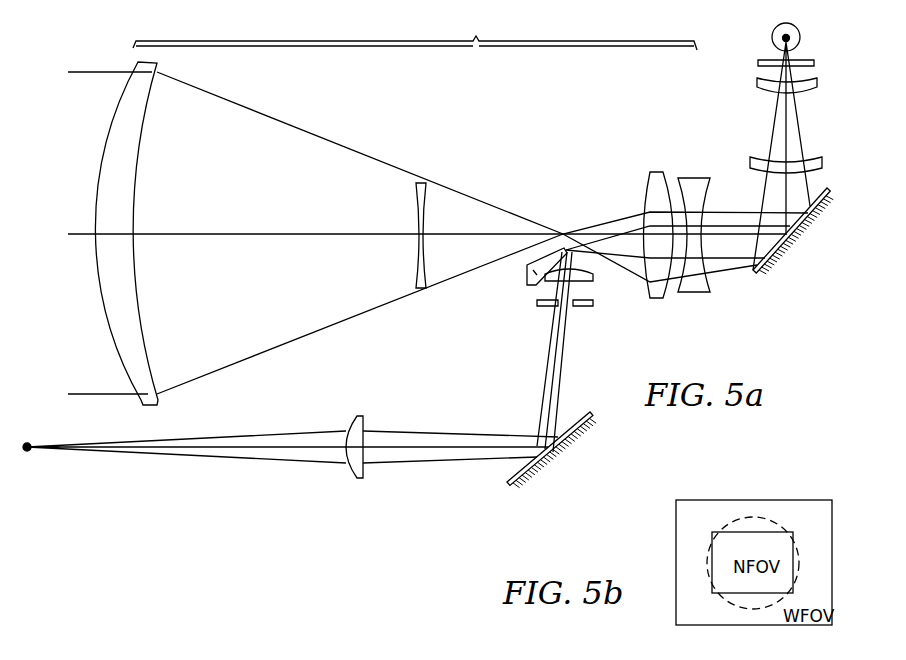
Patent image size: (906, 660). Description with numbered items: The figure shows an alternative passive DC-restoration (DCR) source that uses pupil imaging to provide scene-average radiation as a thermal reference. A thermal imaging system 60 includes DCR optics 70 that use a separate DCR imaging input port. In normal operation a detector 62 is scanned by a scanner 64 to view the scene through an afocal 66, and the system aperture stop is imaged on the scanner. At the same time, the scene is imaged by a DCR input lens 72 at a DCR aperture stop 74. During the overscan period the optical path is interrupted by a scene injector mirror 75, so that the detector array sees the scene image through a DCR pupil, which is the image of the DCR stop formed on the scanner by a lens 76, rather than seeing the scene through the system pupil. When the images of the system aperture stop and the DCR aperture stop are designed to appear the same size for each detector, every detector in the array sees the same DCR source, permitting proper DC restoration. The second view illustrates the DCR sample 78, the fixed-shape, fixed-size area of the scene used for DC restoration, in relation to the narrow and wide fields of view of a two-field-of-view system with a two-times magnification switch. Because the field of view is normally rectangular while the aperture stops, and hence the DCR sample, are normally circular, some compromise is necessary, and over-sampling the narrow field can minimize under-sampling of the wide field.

In FIG. 5a, the thermal imaging system 60 is at (267, 293).
In FIG. 5a, the detector 62 is at (772, 37).
In FIG. 5a, the scanner 64 is at (791, 251).
In FIG. 5a, the afocal 66 is at (415, 31).
In FIG. 5a, the DCR optics 70 is at (504, 410).
In FIG. 5a, the DCR input lens 72 is at (357, 416).
In FIG. 5a, the DCR aperture stop 74 is at (594, 307).
In FIG. 5a, the scene injector mirror 75 is at (527, 277).
In FIG. 5a, the lens 76 is at (595, 277).
In FIG. 5b, the DCR sample 78 is at (740, 517).